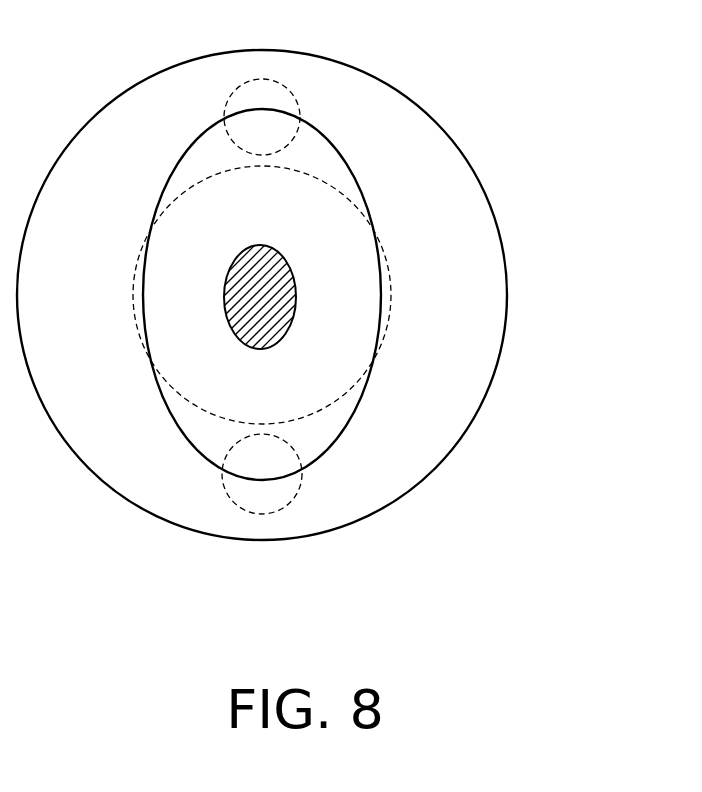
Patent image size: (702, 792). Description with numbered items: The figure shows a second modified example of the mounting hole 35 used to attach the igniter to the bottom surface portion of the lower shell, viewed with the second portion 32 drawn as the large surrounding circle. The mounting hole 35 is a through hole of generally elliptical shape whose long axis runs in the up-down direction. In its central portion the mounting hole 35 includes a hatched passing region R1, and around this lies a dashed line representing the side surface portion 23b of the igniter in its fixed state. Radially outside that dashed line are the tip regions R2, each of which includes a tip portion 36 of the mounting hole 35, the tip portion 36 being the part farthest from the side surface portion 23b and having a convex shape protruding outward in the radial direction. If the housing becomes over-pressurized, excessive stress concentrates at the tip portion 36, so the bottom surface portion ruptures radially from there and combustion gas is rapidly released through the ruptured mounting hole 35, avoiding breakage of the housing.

The second portion 32 is at (490, 193).
The mounting hole 35 is at (152, 184).
The tip portion 36 is at (262, 109).
The tip region R2 is at (292, 92).
The side surface portion 23b is at (392, 273).
The passing region R1 is at (223, 297).